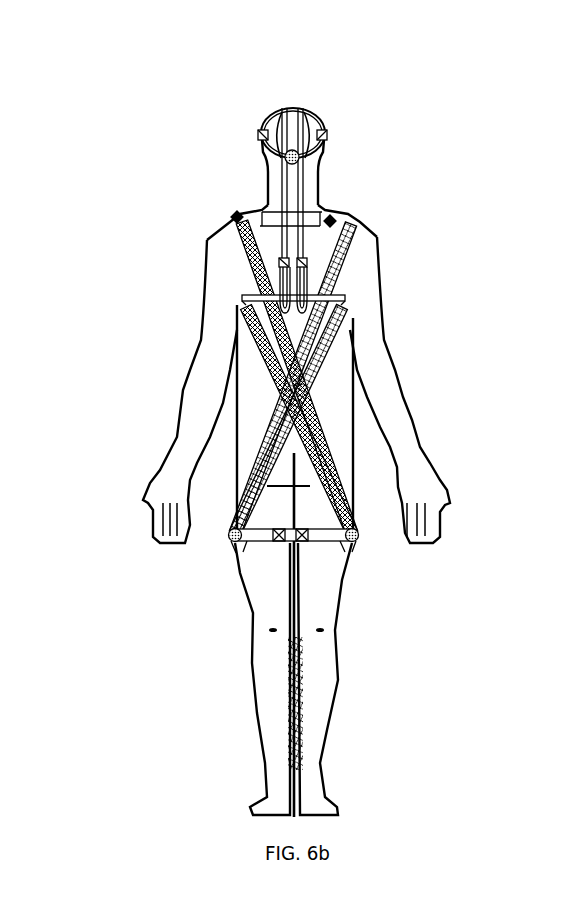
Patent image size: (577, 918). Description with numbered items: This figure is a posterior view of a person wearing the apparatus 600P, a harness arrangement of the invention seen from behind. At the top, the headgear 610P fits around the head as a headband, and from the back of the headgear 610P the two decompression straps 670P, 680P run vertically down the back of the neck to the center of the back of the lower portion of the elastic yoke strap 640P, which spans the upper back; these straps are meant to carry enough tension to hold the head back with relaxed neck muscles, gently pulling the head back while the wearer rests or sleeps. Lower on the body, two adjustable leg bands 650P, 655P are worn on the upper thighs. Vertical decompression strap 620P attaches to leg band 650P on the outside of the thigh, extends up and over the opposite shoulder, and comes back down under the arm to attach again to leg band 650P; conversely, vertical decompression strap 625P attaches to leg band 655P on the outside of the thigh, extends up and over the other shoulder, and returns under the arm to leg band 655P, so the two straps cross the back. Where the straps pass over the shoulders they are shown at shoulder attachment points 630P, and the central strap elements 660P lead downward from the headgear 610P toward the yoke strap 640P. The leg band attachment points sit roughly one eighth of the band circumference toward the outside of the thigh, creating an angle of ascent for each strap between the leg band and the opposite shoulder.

The harness system worn on body 600P is at (443, 142).
The headgear 610P is at (305, 103).
The vertical decompression strap 620P is at (247, 252).
The vertical decompression strap 625P is at (351, 230).
The shoulder attachment 630P is at (237, 216).
The elastic yoke strap 640P is at (344, 298).
The adjustable leg band 650P is at (352, 540).
The adjustable leg band 655P is at (235, 538).
The central straps 660P is at (300, 210).
The decompression strap 670P is at (281, 266).
The decompression strap 680P is at (307, 263).